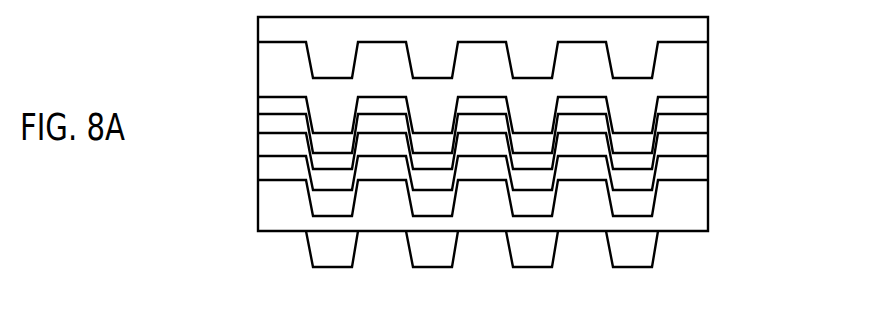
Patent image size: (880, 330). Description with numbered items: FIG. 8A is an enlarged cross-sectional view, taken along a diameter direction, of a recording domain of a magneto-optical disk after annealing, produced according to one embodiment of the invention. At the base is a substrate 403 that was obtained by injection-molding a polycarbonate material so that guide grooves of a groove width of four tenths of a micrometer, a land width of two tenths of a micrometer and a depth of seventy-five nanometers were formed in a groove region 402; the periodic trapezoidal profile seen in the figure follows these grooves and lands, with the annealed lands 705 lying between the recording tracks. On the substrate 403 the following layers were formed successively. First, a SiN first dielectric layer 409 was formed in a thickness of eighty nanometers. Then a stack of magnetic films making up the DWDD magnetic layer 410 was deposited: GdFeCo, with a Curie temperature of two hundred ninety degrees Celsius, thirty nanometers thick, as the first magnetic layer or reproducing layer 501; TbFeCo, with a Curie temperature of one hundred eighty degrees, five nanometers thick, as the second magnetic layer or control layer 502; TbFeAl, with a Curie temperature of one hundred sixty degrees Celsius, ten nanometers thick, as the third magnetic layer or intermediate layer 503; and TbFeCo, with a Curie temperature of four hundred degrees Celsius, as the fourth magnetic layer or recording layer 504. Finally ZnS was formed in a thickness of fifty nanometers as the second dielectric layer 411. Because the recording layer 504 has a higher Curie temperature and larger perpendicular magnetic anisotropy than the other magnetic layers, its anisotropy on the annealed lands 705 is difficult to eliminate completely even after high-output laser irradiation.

The substrate 403 is at (258, 31).
The first dielectric layer 409 is at (258, 70).
The groove region 402 is at (258, 123).
The second dielectric layer 411 is at (258, 202).
The DWDD magnetic layer 410 is at (793, 87).
The first magnetic layer (reproducing layer) 501 is at (697, 105).
The second magnetic layer (control layer) 502 is at (697, 130).
The third magnetic layer (intermediate layer) 503 is at (697, 151).
The fourth magnetic layer (recording layer) 504 is at (697, 172).
The annealed land 705 is at (334, 268).